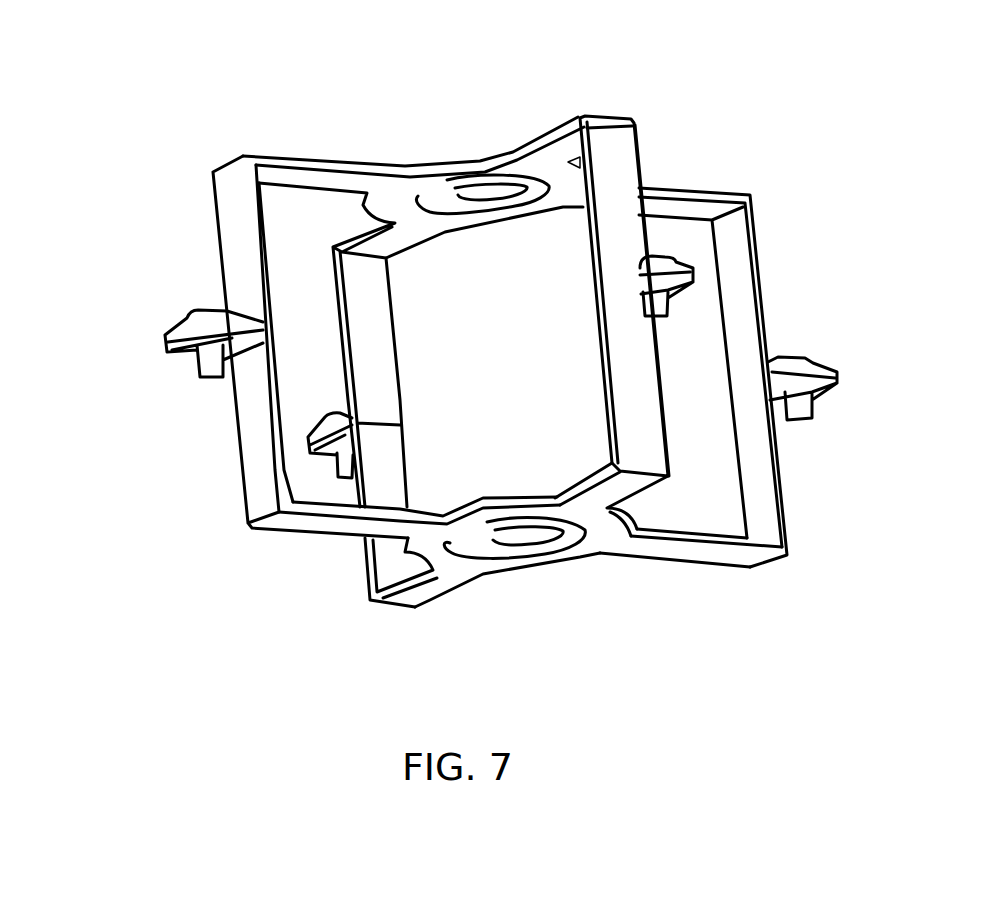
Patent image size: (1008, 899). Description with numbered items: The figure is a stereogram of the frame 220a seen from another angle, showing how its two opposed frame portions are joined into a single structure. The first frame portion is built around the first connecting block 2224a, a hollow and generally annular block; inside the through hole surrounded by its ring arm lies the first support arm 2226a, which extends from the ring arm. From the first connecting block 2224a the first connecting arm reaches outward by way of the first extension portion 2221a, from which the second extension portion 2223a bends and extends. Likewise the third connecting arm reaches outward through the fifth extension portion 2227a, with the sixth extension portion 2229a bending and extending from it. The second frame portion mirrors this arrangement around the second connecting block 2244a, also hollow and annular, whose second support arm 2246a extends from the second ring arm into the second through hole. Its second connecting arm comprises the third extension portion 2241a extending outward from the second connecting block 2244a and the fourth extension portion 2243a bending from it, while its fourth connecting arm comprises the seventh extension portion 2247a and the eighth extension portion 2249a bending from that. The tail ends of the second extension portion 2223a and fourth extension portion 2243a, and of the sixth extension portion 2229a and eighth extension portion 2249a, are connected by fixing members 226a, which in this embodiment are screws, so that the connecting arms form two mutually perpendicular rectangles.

The frame 220a is at (736, 158).
The first extension portion 2221a is at (557, 123).
The second extension portion 2223a is at (603, 158).
The first connecting block 2224a is at (425, 163).
The first support arm 2226a is at (513, 170).
The fifth extension portion 2227a is at (270, 173).
The sixth extension portion 2229a is at (735, 262).
The third extension portion 2241a is at (405, 620).
The fourth extension portion 2243a is at (630, 393).
The second connecting block 2244a is at (622, 520).
The second support arm 2246a is at (513, 537).
The seventh extension portion 2247a is at (720, 558).
The eighth extension portion 2249a is at (263, 472).
The fixing member 226a is at (195, 310).